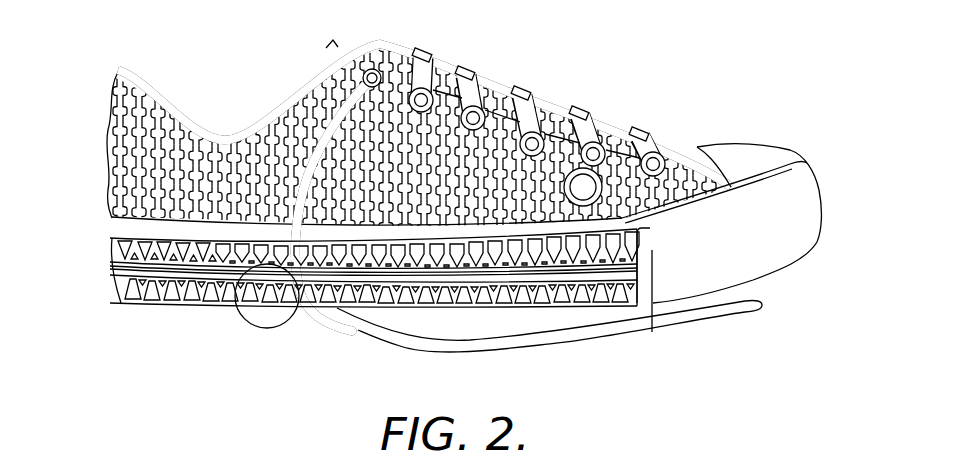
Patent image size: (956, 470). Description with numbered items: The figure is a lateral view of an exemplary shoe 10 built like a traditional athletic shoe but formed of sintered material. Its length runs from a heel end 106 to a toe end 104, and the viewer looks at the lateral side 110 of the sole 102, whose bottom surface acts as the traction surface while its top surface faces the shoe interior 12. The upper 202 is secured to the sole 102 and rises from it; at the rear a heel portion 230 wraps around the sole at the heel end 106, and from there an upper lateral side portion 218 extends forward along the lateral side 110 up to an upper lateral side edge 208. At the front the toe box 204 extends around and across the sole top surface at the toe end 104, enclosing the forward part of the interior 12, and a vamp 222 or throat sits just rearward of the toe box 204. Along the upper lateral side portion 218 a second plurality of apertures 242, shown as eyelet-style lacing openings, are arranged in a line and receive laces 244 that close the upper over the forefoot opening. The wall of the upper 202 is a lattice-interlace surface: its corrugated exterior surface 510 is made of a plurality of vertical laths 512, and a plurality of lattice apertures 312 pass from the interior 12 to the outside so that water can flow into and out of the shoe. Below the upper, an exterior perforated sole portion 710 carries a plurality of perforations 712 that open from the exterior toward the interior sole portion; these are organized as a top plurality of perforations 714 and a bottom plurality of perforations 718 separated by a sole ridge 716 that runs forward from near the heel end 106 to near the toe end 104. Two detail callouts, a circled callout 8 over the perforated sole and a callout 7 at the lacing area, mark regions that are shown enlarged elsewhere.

The shoe 10 is at (102, 67).
The interior 12 is at (203, 100).
The sole 102 is at (568, 336).
The toe end 104 is at (822, 232).
The heel end 106 is at (113, 300).
The lateral side 110 is at (374, 286).
The upper 202 is at (452, 93).
The toe box 204 is at (770, 146).
The upper lateral side edge 208 is at (303, 87).
The upper lateral side portion 218 is at (464, 300).
The vamp 222 is at (699, 146).
The heel portion 230 is at (112, 158).
The second plurality of apertures 242 is at (500, 98).
The laces 244 is at (567, 342).
The lattice apertures 312 is at (245, 152).
The corrugated exterior surface 510 is at (200, 190).
The vertical laths 512 is at (173, 215).
The lace retaining ring 7 is at (598, 168).
The exterior perforated sole portion 710 is at (508, 305).
The perforations 712 is at (348, 305).
The top plurality of perforations 714 is at (652, 326).
The sole ridge 716 is at (644, 306).
The bottom plurality of perforations 718 is at (607, 308).
The detail area of FIG. 8 is at (270, 328).